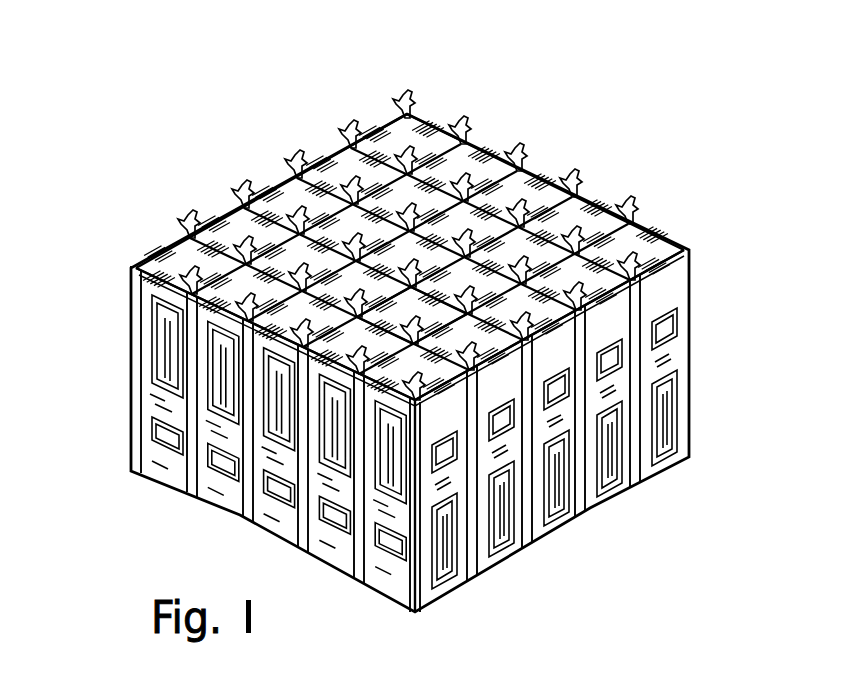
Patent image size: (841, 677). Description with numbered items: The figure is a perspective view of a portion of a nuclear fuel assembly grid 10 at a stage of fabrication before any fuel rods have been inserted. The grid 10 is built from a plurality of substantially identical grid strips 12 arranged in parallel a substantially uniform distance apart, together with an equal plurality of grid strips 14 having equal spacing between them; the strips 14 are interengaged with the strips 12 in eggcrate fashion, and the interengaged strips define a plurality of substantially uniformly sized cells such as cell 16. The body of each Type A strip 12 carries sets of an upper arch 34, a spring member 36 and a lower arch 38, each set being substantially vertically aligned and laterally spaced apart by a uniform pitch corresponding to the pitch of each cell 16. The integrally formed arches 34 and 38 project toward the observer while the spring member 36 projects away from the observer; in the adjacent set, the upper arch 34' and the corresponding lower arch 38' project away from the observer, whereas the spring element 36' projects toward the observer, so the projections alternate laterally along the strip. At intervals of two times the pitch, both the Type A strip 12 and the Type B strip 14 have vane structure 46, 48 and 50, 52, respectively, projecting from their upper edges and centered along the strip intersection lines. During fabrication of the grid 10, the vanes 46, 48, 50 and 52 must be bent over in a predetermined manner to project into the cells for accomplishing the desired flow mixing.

The fuel assembly grid 10 is at (540, 76).
The grid strip 12 is at (160, 255).
The grid strip 14 is at (540, 206).
The cell 16 is at (430, 287).
The upper arch 34 is at (110, 343).
The spring member 36 is at (108, 346).
The upper arch 34' is at (141, 372).
The spring element 36' is at (138, 385).
The lower arch 38 is at (115, 449).
The lower arch 38' is at (143, 482).
The vane structure 46 is at (535, 170).
The vane structure 48 is at (635, 273).
The vane structure 50 is at (413, 333).
The vane structure 52 is at (422, 316).